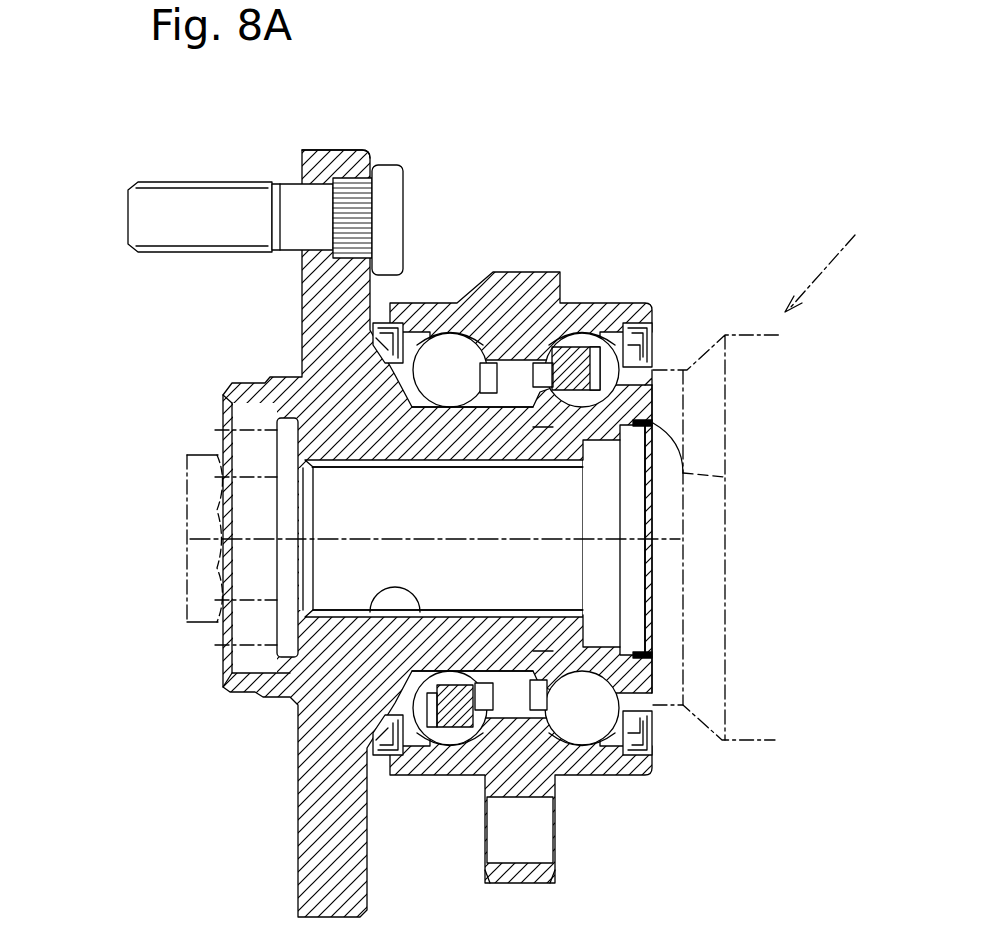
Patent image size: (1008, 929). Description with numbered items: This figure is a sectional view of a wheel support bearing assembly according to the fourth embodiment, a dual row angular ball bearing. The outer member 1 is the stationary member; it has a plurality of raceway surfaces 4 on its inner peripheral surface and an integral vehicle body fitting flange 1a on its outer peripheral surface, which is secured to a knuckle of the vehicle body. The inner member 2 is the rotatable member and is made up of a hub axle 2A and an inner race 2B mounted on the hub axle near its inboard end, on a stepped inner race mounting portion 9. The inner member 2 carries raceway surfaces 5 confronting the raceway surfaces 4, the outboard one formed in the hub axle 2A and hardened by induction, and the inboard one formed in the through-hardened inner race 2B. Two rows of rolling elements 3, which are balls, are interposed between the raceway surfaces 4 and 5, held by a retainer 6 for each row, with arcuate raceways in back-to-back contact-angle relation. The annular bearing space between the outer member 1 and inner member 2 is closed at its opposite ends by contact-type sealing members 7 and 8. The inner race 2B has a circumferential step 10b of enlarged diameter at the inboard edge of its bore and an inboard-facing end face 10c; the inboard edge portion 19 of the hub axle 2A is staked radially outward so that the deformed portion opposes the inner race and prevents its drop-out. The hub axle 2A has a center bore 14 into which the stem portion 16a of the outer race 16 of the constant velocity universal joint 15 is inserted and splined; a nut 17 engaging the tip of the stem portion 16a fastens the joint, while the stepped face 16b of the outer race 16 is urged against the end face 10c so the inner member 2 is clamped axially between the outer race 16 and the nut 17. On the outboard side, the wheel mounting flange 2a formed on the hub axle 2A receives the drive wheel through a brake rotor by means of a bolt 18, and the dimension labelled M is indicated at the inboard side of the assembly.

The outer member 1 is at (505, 285).
The vehicle body fitting flange 1a is at (525, 883).
The inner member 2 is at (356, 533).
The hub axle 2A is at (347, 400).
The inner race 2B is at (358, 443).
The wheel mounting flange 2a is at (343, 148).
The rolling elements 3 is at (443, 355).
The raceway surfaces 4 is at (468, 335).
The raceway surfaces 5 is at (395, 383).
The retainer 6 is at (537, 372).
The sealing member 7 is at (388, 330).
The sealing member 8 is at (655, 328).
The inner race mounting portion 9 is at (540, 440).
The circumferential step 10b is at (653, 425).
The end face 10c is at (655, 380).
The center bore 14 is at (370, 612).
The constant velocity universal joint 15 is at (829, 259).
The outer race 16 is at (742, 333).
The stem portion 16a is at (187, 543).
The stepped face 16b is at (667, 713).
The nut 17 is at (247, 560).
The bolt 18 is at (215, 195).
The inboard edge portion 19 is at (653, 477).
The gap M is at (725, 477).